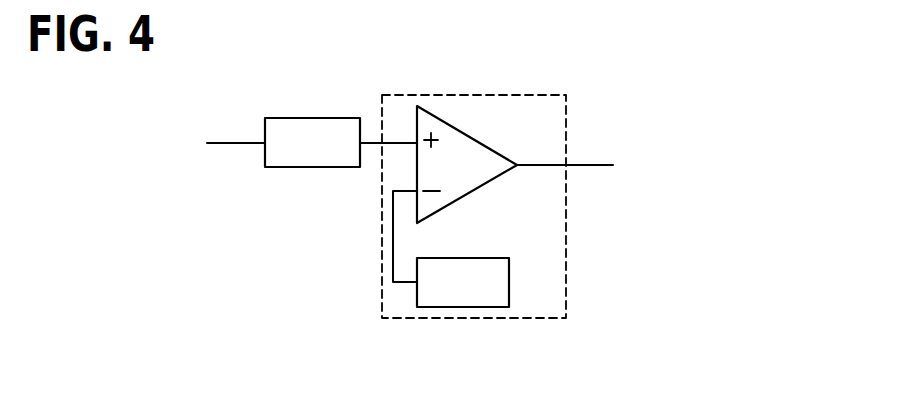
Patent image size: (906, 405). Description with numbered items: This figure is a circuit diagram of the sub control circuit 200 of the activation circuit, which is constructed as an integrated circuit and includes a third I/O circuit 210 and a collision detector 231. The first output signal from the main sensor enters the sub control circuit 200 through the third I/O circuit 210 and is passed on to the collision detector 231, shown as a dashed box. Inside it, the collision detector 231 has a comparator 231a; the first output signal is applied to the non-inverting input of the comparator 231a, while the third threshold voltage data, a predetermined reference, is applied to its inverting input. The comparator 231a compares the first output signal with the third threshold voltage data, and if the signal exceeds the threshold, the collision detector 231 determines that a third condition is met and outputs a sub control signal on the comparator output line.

The sub control circuit 200 is at (612, 68).
The third I/O circuit 210 is at (312, 118).
The collision detector 231 is at (487, 95).
The comparator 231a is at (476, 140).